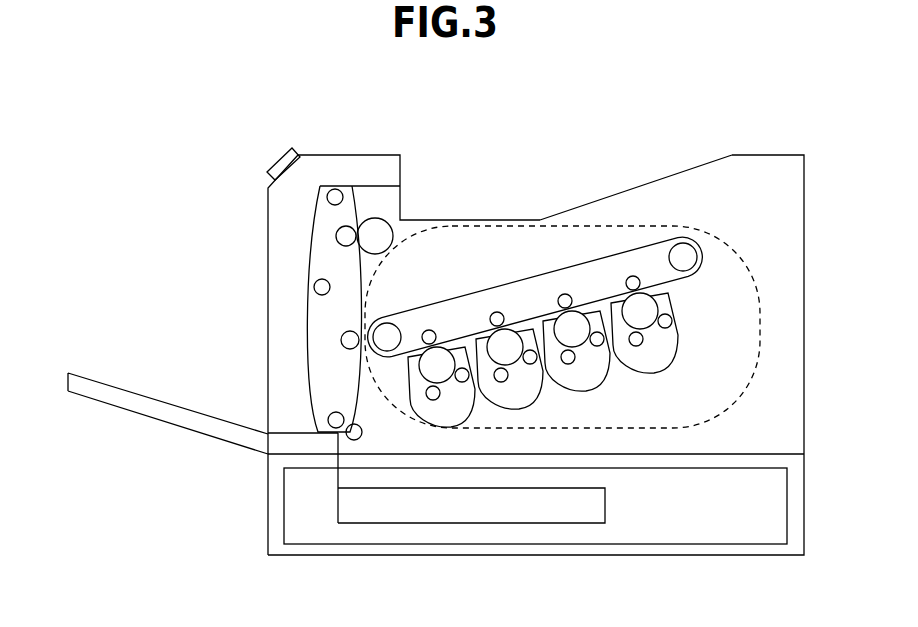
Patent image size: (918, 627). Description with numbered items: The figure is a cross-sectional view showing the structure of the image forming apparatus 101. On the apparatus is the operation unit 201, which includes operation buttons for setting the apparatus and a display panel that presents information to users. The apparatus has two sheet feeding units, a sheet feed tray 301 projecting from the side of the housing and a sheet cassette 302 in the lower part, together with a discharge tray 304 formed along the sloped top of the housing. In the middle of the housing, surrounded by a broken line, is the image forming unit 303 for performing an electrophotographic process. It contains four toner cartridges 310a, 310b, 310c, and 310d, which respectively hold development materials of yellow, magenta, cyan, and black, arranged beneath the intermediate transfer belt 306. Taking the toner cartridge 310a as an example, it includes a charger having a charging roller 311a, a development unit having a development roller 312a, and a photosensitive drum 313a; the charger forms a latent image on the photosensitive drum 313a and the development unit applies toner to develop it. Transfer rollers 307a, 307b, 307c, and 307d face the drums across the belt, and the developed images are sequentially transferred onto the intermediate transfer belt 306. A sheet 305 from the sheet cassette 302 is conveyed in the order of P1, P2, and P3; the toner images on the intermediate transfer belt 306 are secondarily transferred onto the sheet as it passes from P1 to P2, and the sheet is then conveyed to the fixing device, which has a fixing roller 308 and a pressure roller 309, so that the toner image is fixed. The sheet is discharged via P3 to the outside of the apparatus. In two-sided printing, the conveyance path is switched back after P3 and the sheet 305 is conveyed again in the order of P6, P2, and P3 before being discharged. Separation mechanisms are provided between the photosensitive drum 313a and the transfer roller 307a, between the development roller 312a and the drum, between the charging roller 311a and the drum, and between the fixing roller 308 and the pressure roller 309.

The image forming apparatus 101 is at (804, 155).
The operation unit 201 is at (278, 158).
The sheet feed tray 301 is at (133, 411).
The sheet cassette 302 is at (284, 521).
The image forming unit 303 is at (735, 258).
The discharge tray 304 is at (626, 190).
The sheet 305 is at (520, 524).
The intermediate transfer belt 306 is at (680, 237).
The transfer roller 307a is at (628, 277).
The primary transfer roller (M) 307b is at (563, 293).
The primary transfer roller (C) 307c is at (495, 311).
The primary transfer roller (Bk) 307d is at (425, 330).
The fixing roller 308 is at (385, 219).
The pressure roller 309 is at (336, 238).
The toner cartridge 310a is at (676, 352).
The toner cartridge 310b is at (600, 384).
The toner cartridge 310c is at (508, 409).
The toner cartridge 310d is at (407, 402).
The charging roller 311a is at (644, 340).
The development roller 312a is at (672, 321).
The photosensitive drum 313a is at (656, 303).
The conveyance path position P1 is at (338, 482).
The conveyance path position P2 is at (357, 385).
The conveyance path position P3 is at (373, 186).
The conveyance path position P6 is at (309, 313).